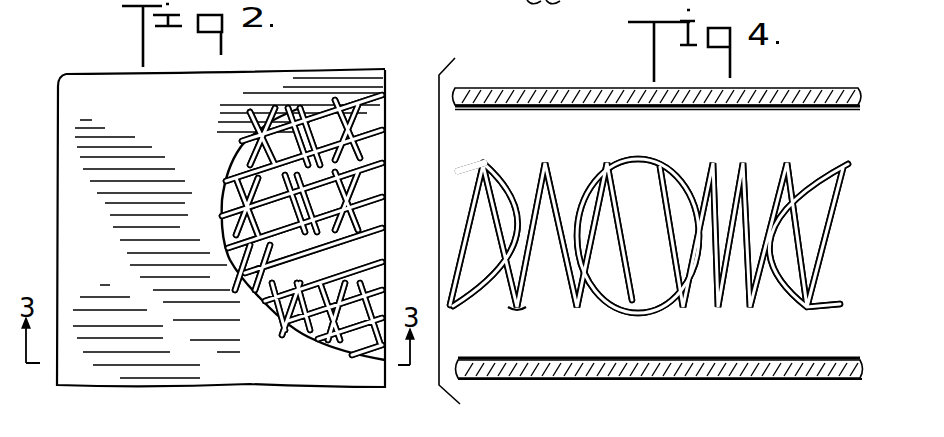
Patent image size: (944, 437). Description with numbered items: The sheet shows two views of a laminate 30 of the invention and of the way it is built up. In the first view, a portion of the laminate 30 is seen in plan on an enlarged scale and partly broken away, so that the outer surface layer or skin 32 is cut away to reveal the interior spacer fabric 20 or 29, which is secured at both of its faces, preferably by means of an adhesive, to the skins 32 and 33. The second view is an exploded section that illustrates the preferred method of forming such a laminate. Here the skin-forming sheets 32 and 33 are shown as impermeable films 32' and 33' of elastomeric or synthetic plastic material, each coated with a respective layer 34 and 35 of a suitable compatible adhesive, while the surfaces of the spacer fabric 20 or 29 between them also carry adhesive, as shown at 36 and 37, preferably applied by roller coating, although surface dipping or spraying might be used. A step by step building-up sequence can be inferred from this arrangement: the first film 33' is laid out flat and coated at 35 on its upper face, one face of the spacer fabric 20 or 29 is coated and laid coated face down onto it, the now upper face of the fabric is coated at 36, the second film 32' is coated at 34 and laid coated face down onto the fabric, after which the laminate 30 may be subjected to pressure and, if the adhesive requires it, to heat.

In FIG. 2, the laminate 30 is at (101, 63).
In FIG. 2, the surface layer or skin 32 is at (225, 79).
In FIG. 2, the surface layer or skin 33 is at (323, 234).
In FIG. 2, the spacer fabric 20 is at (379, 110).
In FIG. 4, the spacer fabric 20 is at (693, 169).
In FIG. 2, the spacer fabric 29 is at (383, 105).
In FIG. 4, the spacer fabric 29 is at (691, 163).
In FIG. 4, the impermeable film 32' is at (657, 77).
In FIG. 4, the adhesive layer 34 is at (569, 104).
In FIG. 4, the impermeable film 33' is at (659, 389).
In FIG. 4, the adhesive layer 35 is at (633, 357).
In FIG. 4, the adhesive coating on spacer fabric surface 36 is at (486, 164).
In FIG. 4, the adhesive coating on spacer fabric surface 37 is at (518, 309).